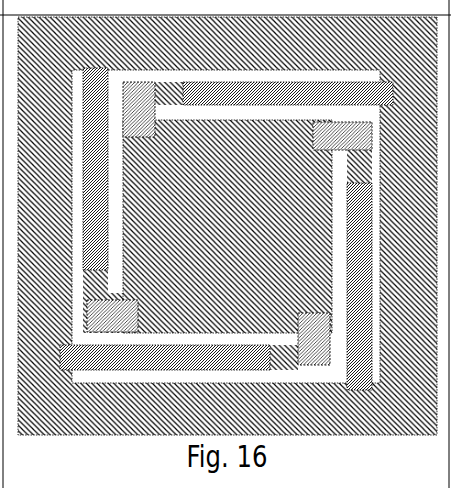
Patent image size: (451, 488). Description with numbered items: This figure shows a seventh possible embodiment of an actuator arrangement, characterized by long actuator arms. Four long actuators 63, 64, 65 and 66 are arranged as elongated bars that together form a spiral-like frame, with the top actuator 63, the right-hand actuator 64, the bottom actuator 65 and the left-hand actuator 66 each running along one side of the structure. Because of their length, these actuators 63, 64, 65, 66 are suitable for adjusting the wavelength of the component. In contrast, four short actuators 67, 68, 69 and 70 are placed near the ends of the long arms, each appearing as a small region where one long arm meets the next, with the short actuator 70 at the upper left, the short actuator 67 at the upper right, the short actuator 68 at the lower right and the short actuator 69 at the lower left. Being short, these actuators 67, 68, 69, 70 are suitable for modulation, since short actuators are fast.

The actuator 63 is at (274, 95).
The actuator 64 is at (358, 270).
The actuator 65 is at (179, 360).
The actuator 66 is at (95, 169).
The short actuator 67 is at (342, 137).
The short actuator 68 is at (314, 339).
The short actuator 69 is at (112, 316).
The short actuator 70 is at (139, 109).